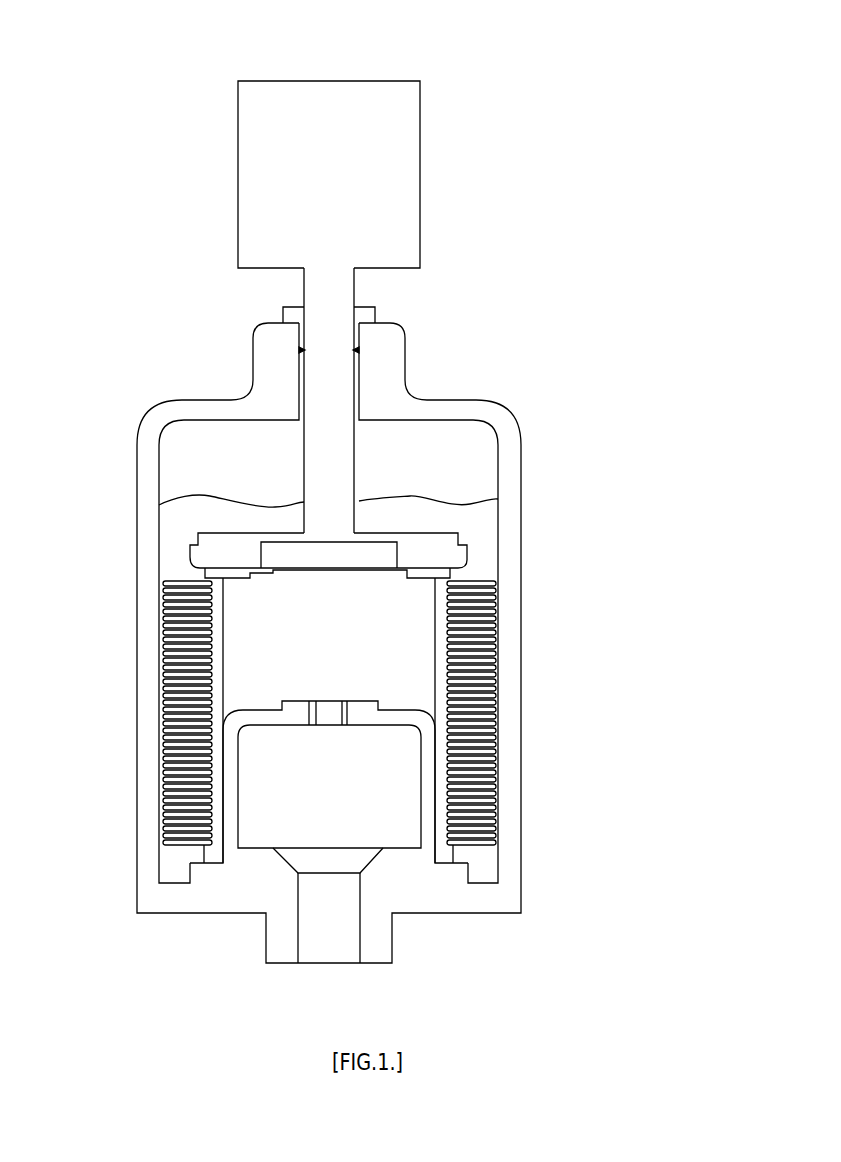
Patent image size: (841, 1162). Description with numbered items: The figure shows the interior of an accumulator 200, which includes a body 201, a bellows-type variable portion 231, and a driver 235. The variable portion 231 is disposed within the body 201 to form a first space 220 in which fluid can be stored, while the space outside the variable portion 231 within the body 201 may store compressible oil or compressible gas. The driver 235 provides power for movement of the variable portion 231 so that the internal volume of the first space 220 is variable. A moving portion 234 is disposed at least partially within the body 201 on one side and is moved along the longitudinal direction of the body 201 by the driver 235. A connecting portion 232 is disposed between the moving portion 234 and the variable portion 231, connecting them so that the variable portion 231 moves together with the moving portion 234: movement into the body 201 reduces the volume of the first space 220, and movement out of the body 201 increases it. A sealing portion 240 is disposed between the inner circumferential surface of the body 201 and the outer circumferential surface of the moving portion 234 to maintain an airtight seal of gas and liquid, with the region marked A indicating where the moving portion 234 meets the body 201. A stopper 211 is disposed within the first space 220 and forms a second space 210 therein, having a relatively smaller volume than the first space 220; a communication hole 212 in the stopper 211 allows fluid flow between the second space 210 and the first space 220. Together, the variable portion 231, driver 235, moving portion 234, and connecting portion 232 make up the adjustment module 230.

The accumulator 200 is at (116, 35).
The body 201 is at (135, 677).
The second space 210 is at (378, 777).
The stopper 211 is at (428, 730).
The communication hole 212 is at (338, 708).
The first space 220 is at (390, 668).
The adjustment module 230 is at (727, 983).
The variable portion 231 is at (493, 637).
The connecting portion 232 is at (443, 543).
The moving portion 234 is at (335, 396).
The driver 235 is at (400, 180).
The sealing portion 240 is at (257, 300).
The coupling region A is at (360, 349).